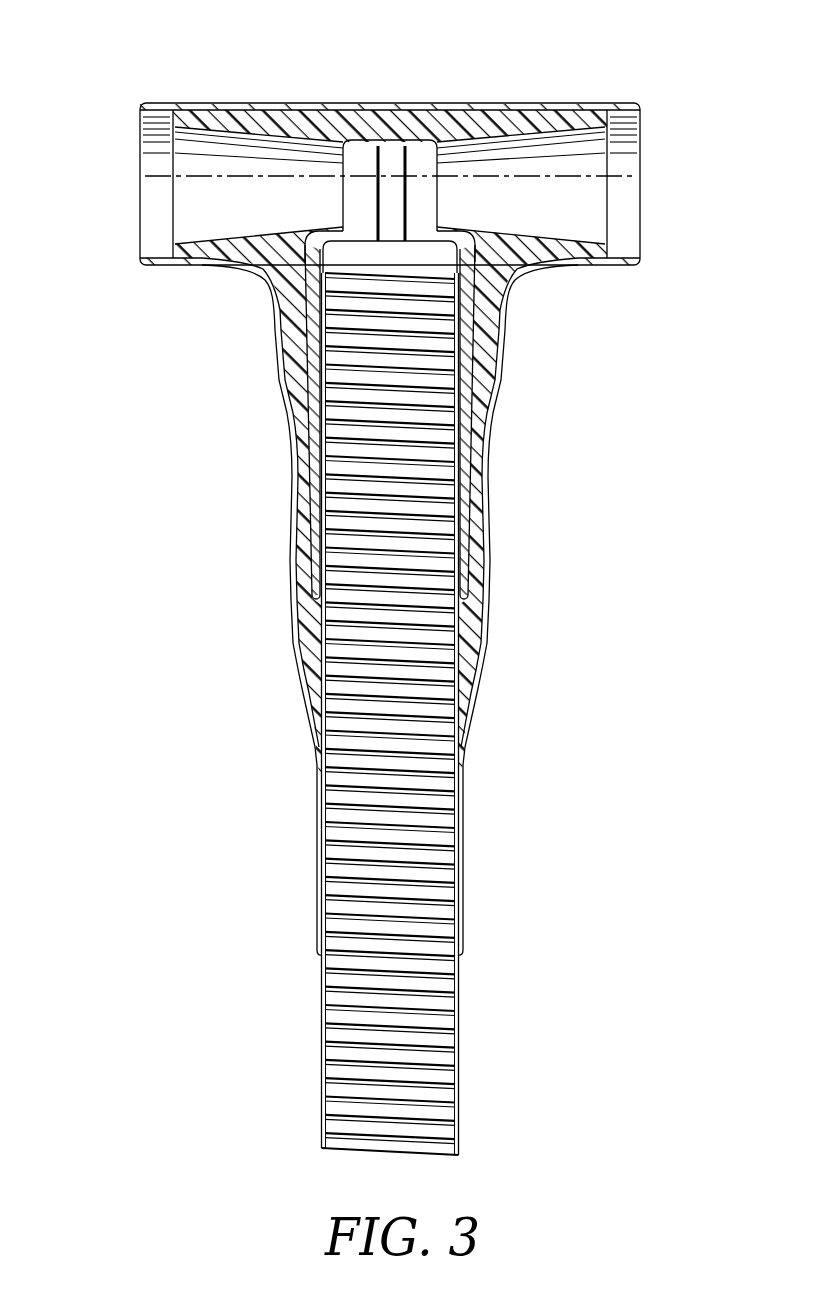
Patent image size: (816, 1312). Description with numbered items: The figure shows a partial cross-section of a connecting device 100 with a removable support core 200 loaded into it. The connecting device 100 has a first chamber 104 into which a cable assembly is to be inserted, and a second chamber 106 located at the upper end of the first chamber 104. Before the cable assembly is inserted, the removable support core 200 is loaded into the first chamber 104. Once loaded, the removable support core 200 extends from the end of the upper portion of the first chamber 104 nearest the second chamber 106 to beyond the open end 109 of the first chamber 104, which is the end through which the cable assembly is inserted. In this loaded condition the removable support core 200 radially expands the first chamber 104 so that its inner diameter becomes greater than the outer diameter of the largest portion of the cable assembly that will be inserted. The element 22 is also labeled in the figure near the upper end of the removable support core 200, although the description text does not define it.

The connecting device 100 is at (636, 74).
The second chamber 106 is at (185, 200).
The first chamber 104 is at (330, 248).
The insert top 22 is at (432, 260).
The removable support core 200 is at (437, 820).
The open end 109 is at (316, 956).